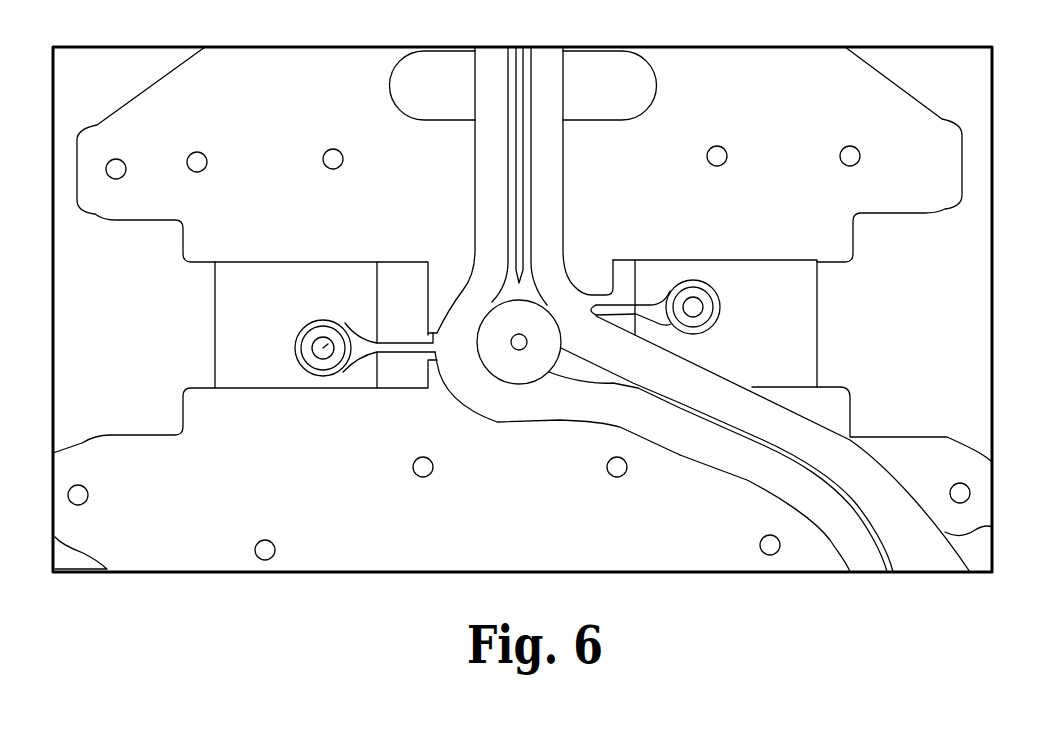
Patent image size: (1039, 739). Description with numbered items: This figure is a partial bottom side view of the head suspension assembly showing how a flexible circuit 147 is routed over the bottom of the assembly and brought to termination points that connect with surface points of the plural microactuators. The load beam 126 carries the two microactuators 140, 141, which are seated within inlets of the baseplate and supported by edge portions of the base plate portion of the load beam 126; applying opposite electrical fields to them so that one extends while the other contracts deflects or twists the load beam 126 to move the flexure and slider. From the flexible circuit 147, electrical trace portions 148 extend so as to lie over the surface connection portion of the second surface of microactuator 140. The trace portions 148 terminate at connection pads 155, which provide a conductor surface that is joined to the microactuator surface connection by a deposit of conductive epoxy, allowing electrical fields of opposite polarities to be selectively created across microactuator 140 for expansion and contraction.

The load beam 126 is at (872, 107).
The microactuator 140 is at (235, 312).
The microactuator 141 is at (783, 315).
The flexible circuit 147 is at (763, 440).
The electrical trace portions 148 is at (397, 352).
The connection pads 155 is at (323, 349).